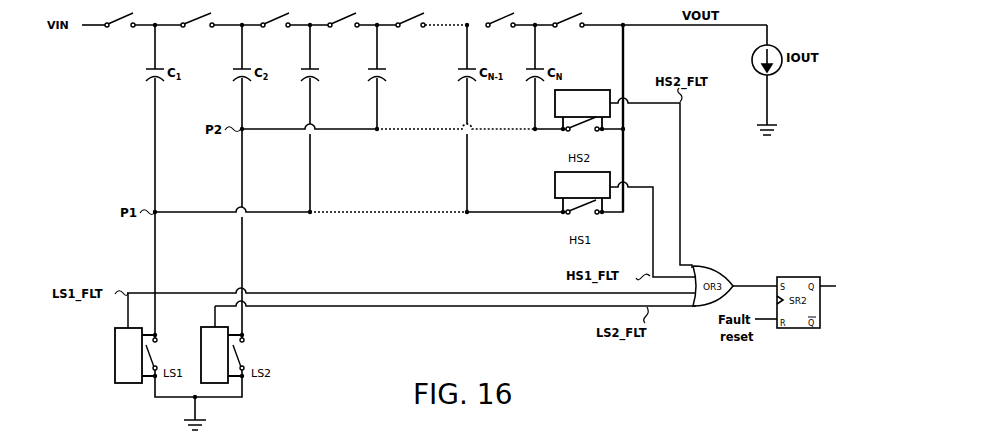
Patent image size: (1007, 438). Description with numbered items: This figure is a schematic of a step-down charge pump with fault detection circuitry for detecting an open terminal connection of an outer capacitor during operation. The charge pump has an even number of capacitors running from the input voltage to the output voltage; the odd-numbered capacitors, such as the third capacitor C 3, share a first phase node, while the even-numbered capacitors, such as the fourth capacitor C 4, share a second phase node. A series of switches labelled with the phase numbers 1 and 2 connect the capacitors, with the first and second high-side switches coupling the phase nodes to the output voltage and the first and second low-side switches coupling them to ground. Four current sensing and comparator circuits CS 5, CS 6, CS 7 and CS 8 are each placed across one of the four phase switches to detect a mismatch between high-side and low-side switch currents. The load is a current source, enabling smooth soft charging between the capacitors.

The phase 1 switches 1 is at (352, 191).
The phase 2 switches 2 is at (372, 191).
The capacitor C3 3 is at (318, 118).
The capacitor C4 4 is at (386, 77).
The current sensor CS5 5 is at (582, 192).
The current sensor CS6 6 is at (582, 109).
The current sensor CS7 7 is at (135, 355).
The current sensor CS8 8 is at (221, 355).